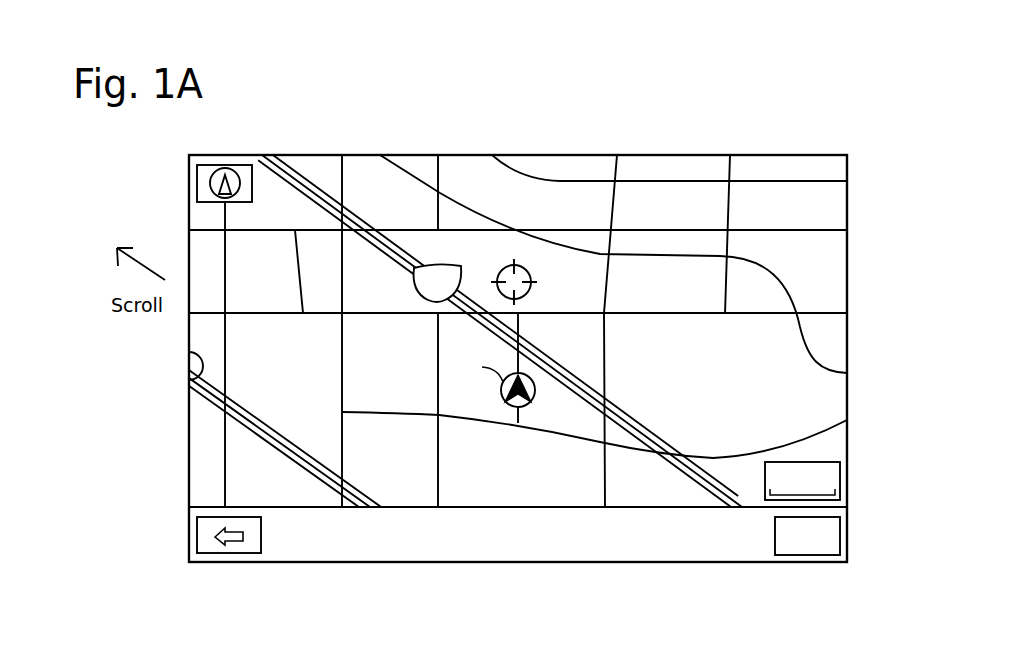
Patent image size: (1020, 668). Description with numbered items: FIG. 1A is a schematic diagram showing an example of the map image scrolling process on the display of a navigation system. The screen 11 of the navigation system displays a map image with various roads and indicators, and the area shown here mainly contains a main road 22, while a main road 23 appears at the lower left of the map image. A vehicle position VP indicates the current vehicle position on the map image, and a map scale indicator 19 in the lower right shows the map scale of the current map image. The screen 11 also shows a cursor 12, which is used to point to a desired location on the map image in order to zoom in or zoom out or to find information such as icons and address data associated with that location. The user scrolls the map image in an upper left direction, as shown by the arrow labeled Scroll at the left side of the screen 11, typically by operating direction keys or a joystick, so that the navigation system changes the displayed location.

The screen 11 is at (657, 120).
The cursor 12 is at (500, 268).
The map scale indicator 19 is at (822, 464).
The main road 22 is at (617, 410).
The main road 23 is at (296, 447).